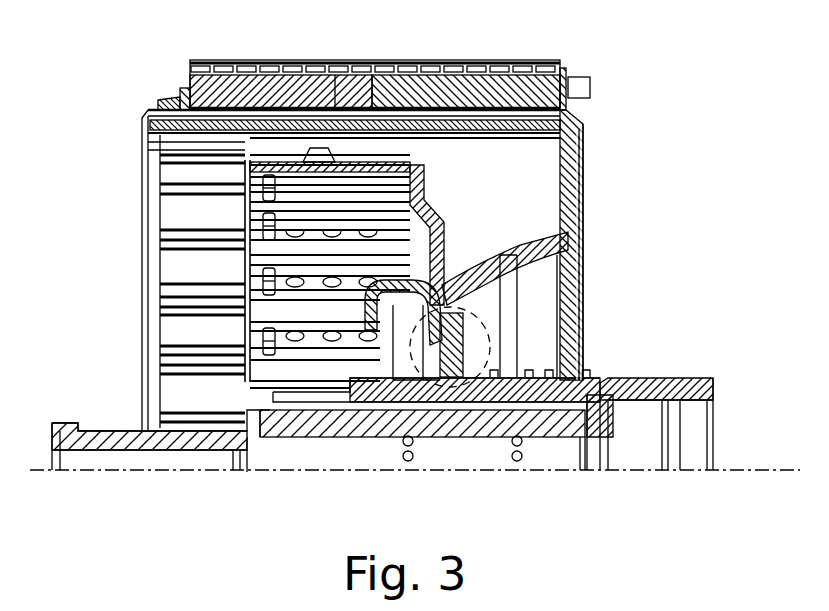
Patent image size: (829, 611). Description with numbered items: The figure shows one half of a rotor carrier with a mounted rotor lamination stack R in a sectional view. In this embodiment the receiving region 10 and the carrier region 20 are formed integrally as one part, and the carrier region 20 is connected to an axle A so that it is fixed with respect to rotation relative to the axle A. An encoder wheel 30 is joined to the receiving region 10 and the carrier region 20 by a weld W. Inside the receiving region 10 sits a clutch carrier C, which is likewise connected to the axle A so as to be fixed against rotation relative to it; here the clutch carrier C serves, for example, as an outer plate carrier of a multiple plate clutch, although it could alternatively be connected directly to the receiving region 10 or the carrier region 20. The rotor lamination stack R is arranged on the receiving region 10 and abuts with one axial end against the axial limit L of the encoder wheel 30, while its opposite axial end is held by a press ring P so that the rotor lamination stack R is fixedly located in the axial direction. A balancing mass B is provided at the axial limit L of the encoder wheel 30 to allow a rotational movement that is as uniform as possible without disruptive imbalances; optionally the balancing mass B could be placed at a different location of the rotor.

The receiving region 10 is at (143, 128).
The carrier region 20 is at (568, 257).
The encoder wheel 30 is at (594, 325).
The press ring P is at (166, 98).
The rotor lamination stack R is at (338, 82).
The axial limit L is at (570, 66).
The balancing mass B is at (594, 88).
The weld W is at (594, 127).
The clutch carrier C is at (350, 313).
The axle A is at (650, 398).